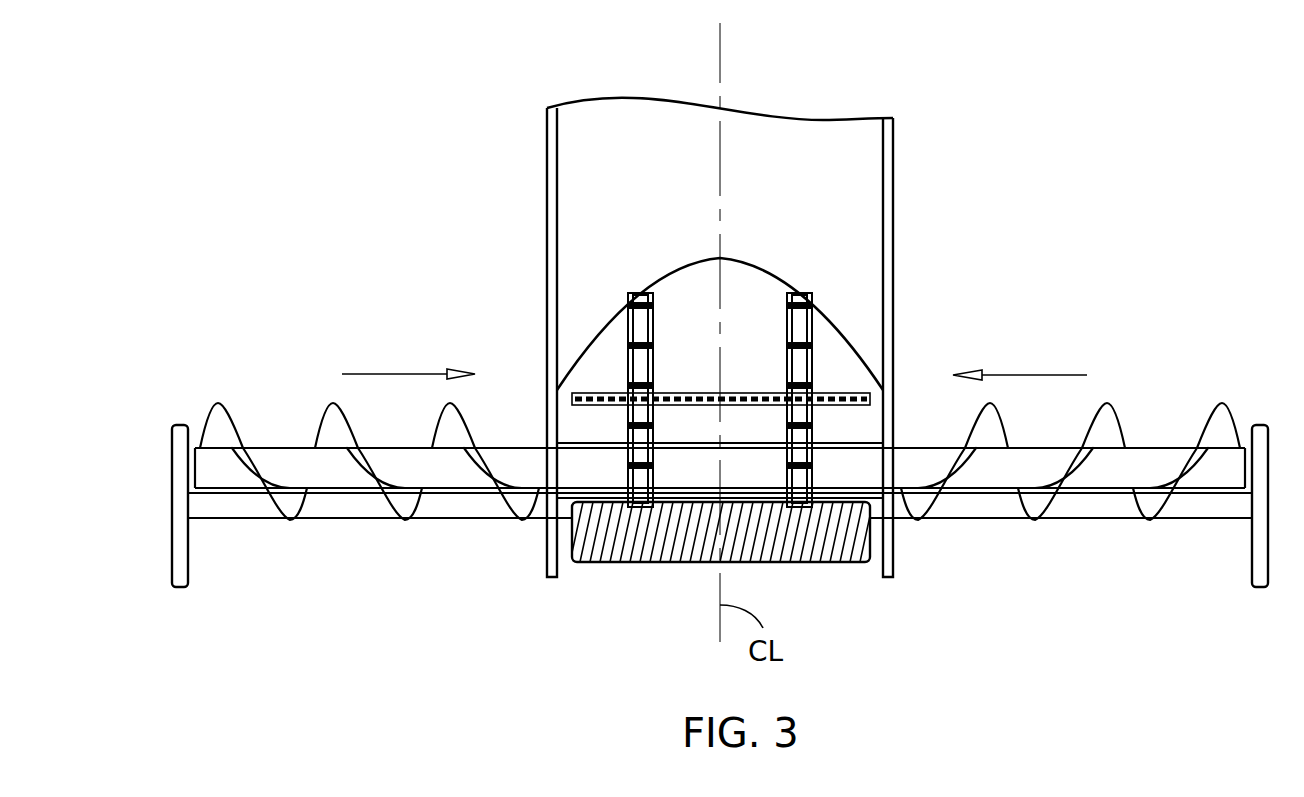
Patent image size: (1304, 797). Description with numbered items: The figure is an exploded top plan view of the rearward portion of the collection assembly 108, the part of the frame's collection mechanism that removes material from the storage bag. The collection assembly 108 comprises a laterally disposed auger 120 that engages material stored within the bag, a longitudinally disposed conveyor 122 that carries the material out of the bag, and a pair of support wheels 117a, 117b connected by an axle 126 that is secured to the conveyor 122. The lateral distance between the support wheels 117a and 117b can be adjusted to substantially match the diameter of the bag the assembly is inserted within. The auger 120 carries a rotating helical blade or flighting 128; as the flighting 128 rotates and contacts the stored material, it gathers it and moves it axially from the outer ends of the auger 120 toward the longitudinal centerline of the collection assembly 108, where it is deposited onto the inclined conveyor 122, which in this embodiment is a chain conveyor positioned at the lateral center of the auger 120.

The collection assembly 108 is at (1103, 238).
The auger 120 is at (1175, 457).
The conveyor 122 is at (685, 302).
The axle 126 is at (987, 510).
The flighting 128 is at (1172, 513).
The support wheel 117a is at (172, 565).
The support wheel 117b is at (1252, 583).